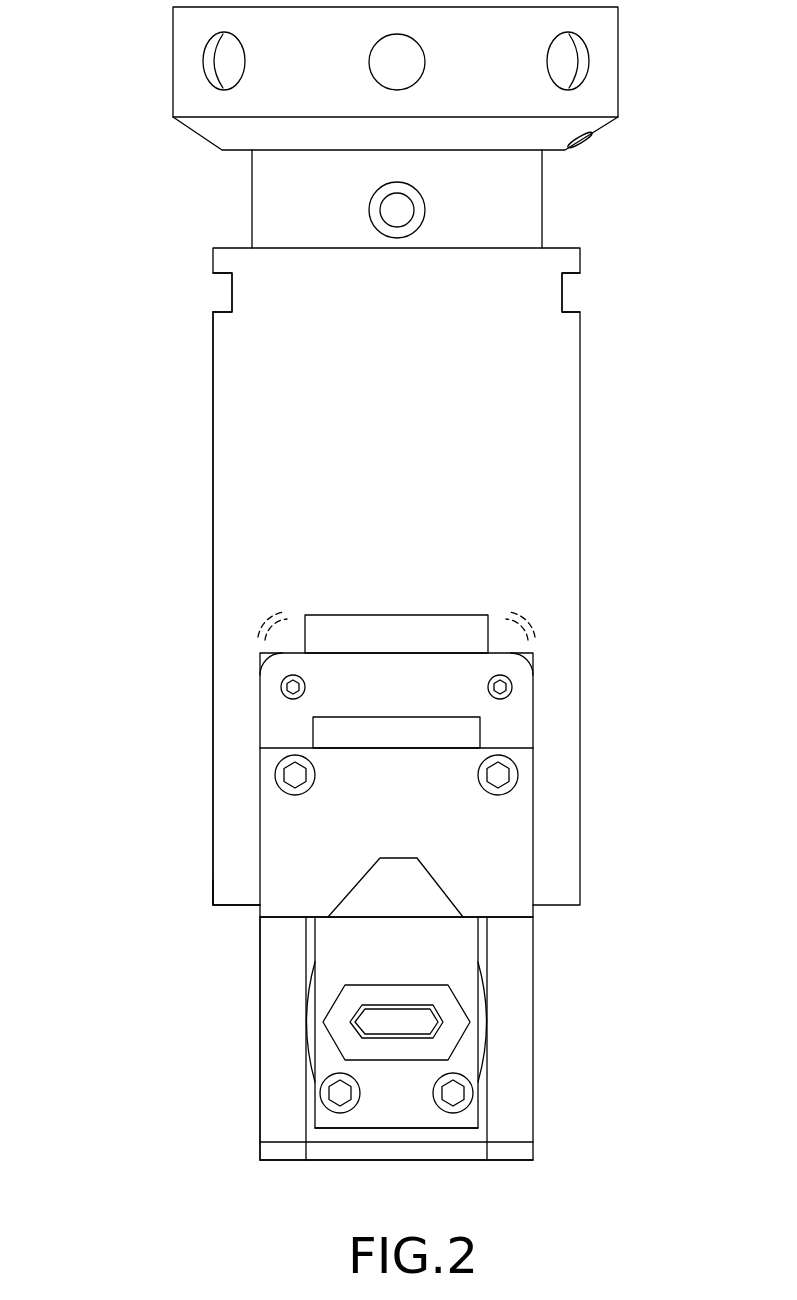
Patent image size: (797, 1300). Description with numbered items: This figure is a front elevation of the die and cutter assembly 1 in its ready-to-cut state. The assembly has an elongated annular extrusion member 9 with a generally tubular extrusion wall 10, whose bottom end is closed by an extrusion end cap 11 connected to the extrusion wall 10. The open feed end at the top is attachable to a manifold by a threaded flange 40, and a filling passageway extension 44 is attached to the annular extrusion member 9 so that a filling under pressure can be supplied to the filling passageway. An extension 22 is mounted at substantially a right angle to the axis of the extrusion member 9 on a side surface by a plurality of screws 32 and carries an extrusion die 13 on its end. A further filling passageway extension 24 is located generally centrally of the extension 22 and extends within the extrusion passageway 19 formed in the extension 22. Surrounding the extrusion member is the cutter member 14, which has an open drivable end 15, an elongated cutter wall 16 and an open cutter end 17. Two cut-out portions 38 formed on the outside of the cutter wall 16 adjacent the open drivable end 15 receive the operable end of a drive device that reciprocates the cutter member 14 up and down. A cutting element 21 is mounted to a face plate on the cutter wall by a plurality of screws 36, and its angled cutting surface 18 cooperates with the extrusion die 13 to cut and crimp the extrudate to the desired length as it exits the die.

The die and cutter assembly 1 is at (108, 184).
The threaded flange 40 is at (173, 52).
The open drivable end 15 is at (590, 138).
The filling passageway extension 44 is at (370, 207).
The cutter member 14 is at (582, 547).
The cut-out portions 38 is at (222, 292).
The elongated cutter wall 16 is at (222, 518).
The open cutter end 17 is at (213, 888).
The cutting element 21 is at (520, 872).
The screws 36 is at (495, 773).
The cutting surface 18 is at (393, 890).
The annular extrusion member 9 is at (275, 1003).
The extrusion wall 10 is at (280, 1120).
The extrusion end cap 11 is at (345, 1142).
The extension 22 is at (410, 1115).
The extrusion die 13 is at (465, 1005).
The extrusion passageway 19 is at (443, 1047).
The filling passageway extension 24 is at (393, 1005).
The screws 32 is at (330, 1093).